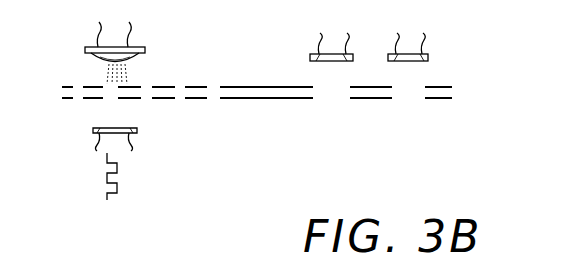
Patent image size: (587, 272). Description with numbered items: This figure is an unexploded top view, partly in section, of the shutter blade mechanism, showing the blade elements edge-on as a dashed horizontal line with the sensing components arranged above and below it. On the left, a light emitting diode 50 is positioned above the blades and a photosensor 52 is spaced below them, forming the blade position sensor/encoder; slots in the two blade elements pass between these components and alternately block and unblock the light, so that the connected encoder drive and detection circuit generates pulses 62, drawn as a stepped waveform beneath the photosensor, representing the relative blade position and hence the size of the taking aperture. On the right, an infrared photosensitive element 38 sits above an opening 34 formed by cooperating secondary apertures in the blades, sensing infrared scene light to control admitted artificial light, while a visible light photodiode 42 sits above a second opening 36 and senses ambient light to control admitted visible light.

The light emitting diode 50 is at (145, 50).
The photosensor 52 is at (91, 130).
The pulses 62 is at (142, 182).
The infrared photosensitive element 38 is at (310, 56).
The visible light photodiode 42 is at (428, 56).
The opening 34 is at (335, 100).
The opening 36 is at (408, 100).